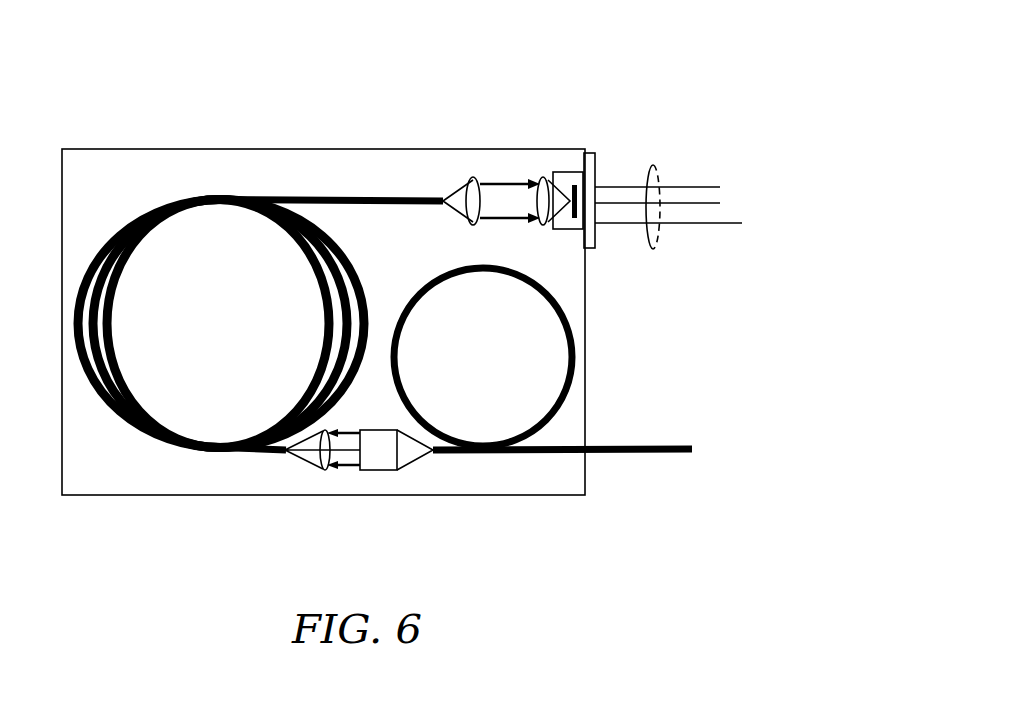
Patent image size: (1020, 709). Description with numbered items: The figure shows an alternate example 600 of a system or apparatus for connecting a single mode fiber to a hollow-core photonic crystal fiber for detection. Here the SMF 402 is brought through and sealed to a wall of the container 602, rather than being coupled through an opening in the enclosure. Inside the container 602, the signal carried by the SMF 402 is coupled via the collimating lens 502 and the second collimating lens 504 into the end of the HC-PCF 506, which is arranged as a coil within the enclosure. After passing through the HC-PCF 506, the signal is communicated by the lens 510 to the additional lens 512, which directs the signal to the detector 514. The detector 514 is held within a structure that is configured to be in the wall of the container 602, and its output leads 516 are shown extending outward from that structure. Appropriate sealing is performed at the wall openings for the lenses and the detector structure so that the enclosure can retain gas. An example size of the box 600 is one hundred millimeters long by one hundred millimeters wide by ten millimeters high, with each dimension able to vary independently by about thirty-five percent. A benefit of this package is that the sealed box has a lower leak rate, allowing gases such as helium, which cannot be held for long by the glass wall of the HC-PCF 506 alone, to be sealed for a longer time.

The alternate example 600 is at (228, 127).
The container 602 is at (147, 496).
The HC-PCF 506 is at (225, 442).
The second collimating lens 504 is at (322, 471).
The collimating lens 502 is at (388, 471).
The SMF 402 is at (652, 445).
The lens 510 is at (477, 176).
The additional lens 512 is at (545, 176).
The detector 514 is at (575, 185).
The output leads 516 is at (657, 167).